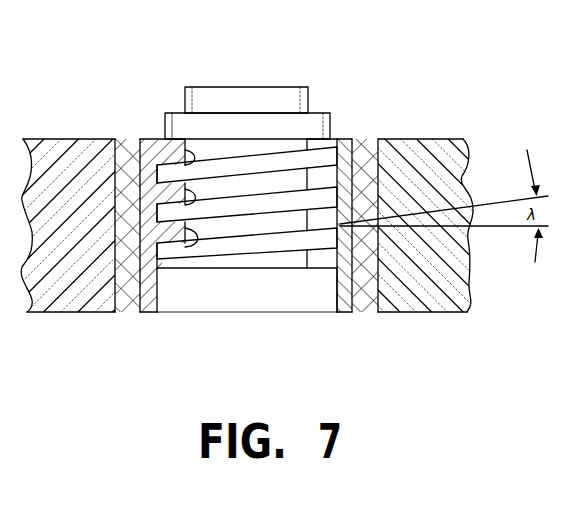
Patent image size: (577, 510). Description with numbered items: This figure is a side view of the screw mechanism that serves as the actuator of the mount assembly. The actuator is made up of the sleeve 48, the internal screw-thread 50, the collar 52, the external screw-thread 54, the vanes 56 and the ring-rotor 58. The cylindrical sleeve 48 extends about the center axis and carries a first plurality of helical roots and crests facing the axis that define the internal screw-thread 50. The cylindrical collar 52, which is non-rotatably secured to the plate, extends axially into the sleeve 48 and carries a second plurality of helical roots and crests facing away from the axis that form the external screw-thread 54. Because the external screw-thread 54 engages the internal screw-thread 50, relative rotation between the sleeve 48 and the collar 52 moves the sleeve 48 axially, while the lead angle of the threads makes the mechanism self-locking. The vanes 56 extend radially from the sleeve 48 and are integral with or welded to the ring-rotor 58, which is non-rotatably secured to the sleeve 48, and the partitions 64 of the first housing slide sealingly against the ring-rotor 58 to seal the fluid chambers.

The sleeve 48 is at (152, 139).
The internal screw-thread 50 is at (191, 154).
The collar 52 is at (270, 125).
The external screw-thread 54 is at (352, 157).
The vanes 56 is at (438, 186).
The ring-rotor 58 is at (380, 257).
The partitions 64 is at (78, 191).